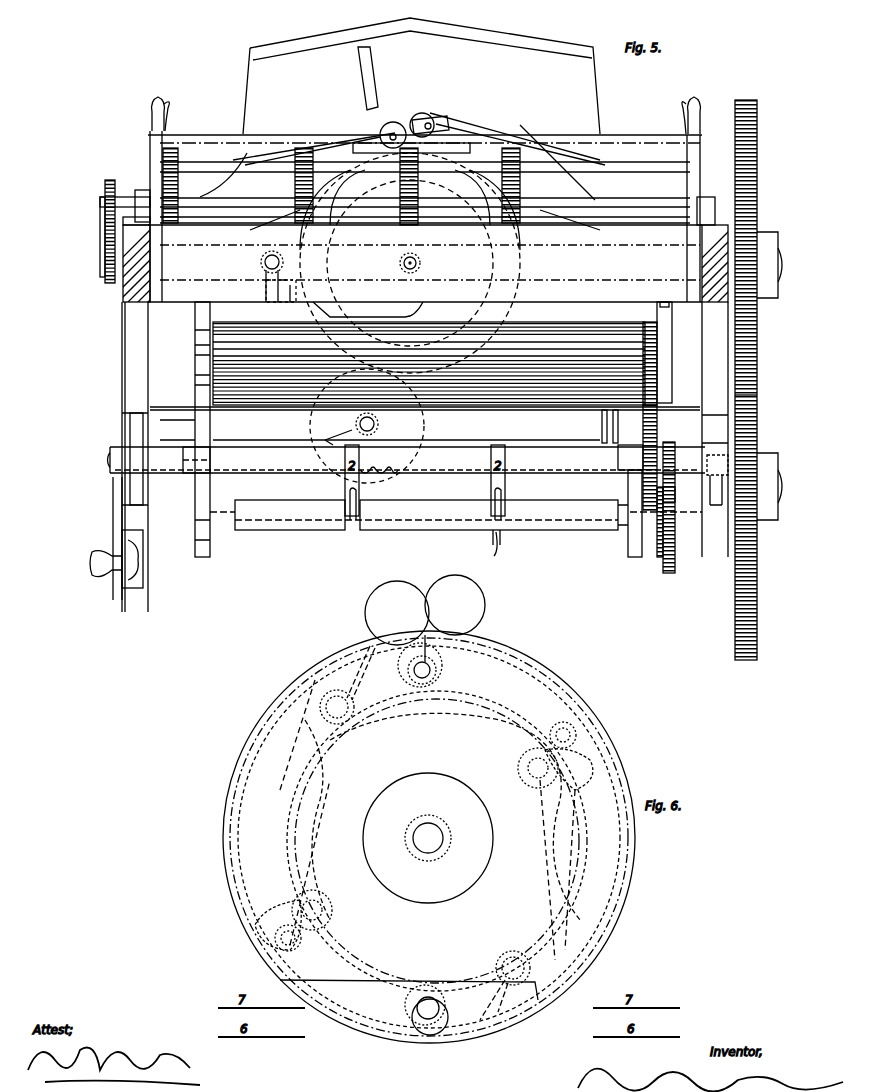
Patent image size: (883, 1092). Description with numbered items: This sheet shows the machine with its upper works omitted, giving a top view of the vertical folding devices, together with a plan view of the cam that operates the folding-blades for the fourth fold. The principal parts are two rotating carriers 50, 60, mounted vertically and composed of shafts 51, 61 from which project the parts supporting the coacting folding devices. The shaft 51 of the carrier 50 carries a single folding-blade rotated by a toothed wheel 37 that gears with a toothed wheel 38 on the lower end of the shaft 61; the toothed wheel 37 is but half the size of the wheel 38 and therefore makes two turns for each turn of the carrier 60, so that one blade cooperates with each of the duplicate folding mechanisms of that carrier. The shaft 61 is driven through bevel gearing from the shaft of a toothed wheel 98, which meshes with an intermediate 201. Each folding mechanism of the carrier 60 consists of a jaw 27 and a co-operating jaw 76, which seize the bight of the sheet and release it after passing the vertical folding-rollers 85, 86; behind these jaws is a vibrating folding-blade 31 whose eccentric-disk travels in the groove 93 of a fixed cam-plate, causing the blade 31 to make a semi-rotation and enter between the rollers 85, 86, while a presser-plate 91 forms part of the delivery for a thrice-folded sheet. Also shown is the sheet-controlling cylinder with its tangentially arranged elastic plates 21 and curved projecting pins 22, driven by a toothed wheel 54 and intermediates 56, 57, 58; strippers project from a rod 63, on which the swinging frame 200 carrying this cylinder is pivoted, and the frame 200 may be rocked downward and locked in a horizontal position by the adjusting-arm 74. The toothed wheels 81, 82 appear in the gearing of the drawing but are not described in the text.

In FIG. 5, the elastic plates 21 is at (456, 515).
In FIG. 5, the curved projecting pins 22 is at (505, 543).
In FIG. 6, the jaw 27 is at (424, 834).
In FIG. 6, the vibrating folding-blade 31 is at (355, 690).
In FIG. 5, the toothed wheel 37 is at (386, 480).
In FIG. 5, the toothed wheel 38 is at (521, 263).
In FIG. 5, the rotating carrier 50 is at (367, 426).
In FIG. 5, the shaft 51 is at (378, 424).
In FIG. 5, the toothed wheel 54 is at (660, 557).
In FIG. 5, the intermediate 56 is at (675, 524).
In FIG. 5, the intermediate 57 is at (675, 460).
In FIG. 5, the intermediate 58 is at (657, 422).
In FIG. 5, the rotating carrier 60 is at (379, 310).
In FIG. 5, the shaft 61 is at (420, 264).
In FIG. 6, the shaft 61 is at (428, 838).
In FIG. 5, the rod 63 is at (407, 460).
In FIG. 5, the adjusting-arm 74 is at (113, 518).
In FIG. 6, the co-operating jaw 76 is at (575, 768).
In FIG. 5, the gear 81 is at (296, 196).
In FIG. 5, the gear 82 is at (295, 156).
In FIG. 5, the vertical folding-roller 85 is at (432, 114).
In FIG. 6, the vertical folding-roller 85 is at (455, 605).
In FIG. 5, the vertical folding-roller 86 is at (398, 123).
In FIG. 6, the vertical folding-roller 86 is at (397, 613).
In FIG. 6, the presser-plate 91 is at (428, 626).
In FIG. 6, the groove 93 is at (430, 820).
In FIG. 5, the toothed wheel 98 is at (757, 184).
In FIG. 5, the swinging frame 200 is at (195, 400).
In FIG. 5, the intermediate 201 is at (757, 408).